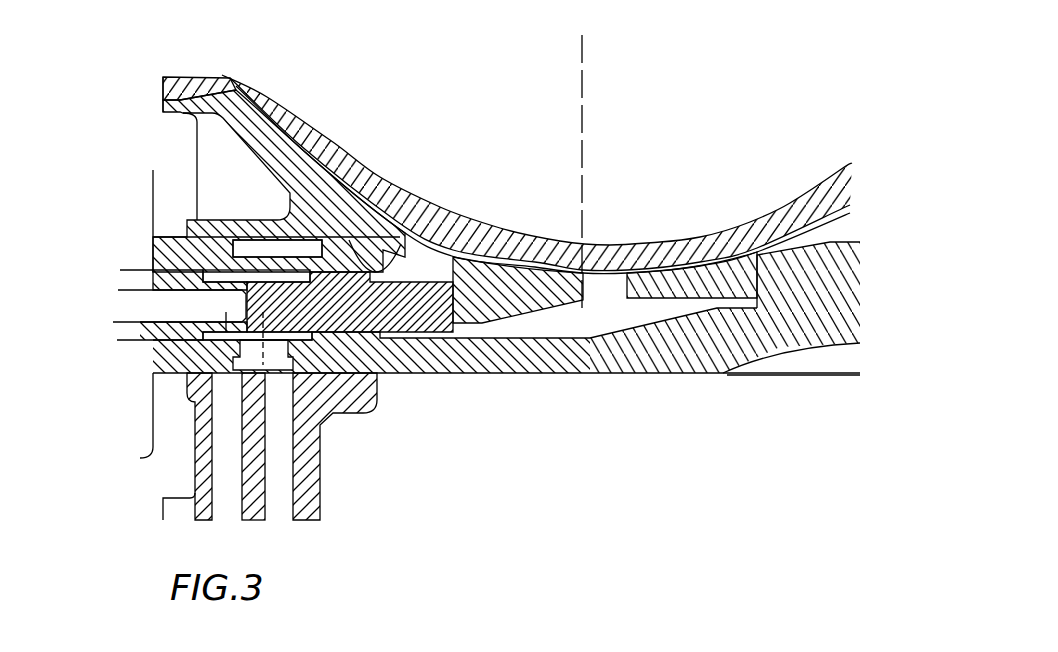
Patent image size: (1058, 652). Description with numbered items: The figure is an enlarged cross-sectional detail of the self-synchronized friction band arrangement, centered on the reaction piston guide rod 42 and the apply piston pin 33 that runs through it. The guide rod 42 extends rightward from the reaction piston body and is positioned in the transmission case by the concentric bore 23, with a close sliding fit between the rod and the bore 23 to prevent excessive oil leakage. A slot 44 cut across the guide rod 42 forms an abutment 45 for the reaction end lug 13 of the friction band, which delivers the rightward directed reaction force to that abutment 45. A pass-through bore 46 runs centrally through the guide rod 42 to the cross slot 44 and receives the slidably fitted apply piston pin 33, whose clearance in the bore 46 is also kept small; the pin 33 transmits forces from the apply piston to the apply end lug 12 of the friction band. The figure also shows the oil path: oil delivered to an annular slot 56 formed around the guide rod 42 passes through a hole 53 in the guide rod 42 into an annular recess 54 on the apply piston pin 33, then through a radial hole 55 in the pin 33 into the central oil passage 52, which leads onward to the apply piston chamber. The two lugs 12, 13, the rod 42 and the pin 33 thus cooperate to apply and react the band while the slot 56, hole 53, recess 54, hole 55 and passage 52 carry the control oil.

The lug 12 is at (493, 280).
The lug 13 is at (690, 287).
The bore 23 is at (423, 283).
The apply piston pin 33 is at (457, 368).
The guide rod 42 is at (662, 365).
The slot 44 is at (565, 323).
The abutment 45 is at (727, 273).
The pass-through bore 46 is at (448, 253).
The central oil passage 52 is at (160, 312).
The hole 53 is at (275, 348).
The annular recess 54 is at (297, 273).
The radial hole 55 is at (235, 335).
The annular slot 56 is at (260, 247).